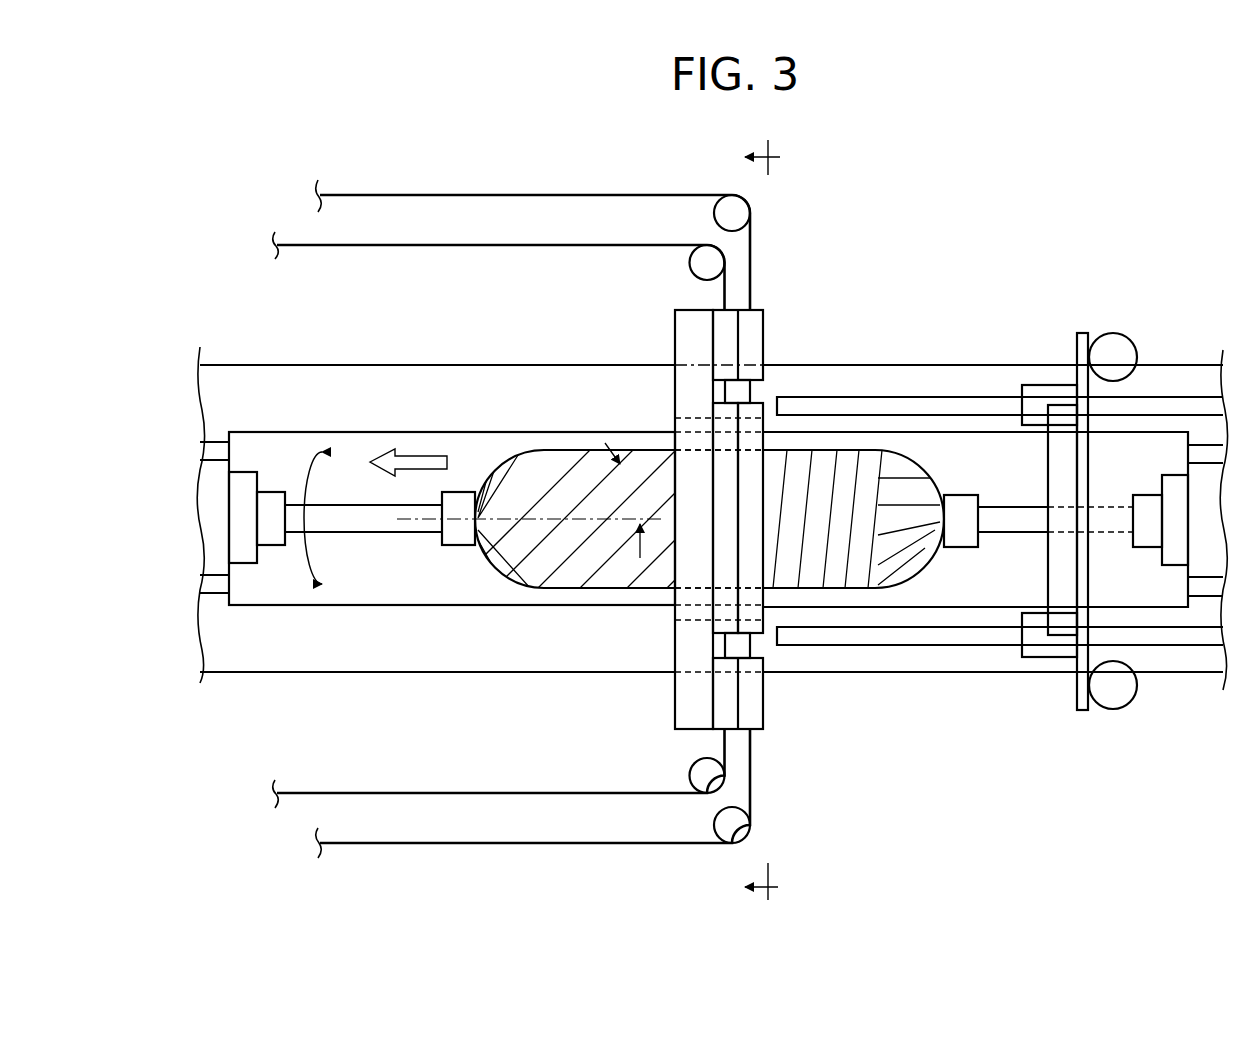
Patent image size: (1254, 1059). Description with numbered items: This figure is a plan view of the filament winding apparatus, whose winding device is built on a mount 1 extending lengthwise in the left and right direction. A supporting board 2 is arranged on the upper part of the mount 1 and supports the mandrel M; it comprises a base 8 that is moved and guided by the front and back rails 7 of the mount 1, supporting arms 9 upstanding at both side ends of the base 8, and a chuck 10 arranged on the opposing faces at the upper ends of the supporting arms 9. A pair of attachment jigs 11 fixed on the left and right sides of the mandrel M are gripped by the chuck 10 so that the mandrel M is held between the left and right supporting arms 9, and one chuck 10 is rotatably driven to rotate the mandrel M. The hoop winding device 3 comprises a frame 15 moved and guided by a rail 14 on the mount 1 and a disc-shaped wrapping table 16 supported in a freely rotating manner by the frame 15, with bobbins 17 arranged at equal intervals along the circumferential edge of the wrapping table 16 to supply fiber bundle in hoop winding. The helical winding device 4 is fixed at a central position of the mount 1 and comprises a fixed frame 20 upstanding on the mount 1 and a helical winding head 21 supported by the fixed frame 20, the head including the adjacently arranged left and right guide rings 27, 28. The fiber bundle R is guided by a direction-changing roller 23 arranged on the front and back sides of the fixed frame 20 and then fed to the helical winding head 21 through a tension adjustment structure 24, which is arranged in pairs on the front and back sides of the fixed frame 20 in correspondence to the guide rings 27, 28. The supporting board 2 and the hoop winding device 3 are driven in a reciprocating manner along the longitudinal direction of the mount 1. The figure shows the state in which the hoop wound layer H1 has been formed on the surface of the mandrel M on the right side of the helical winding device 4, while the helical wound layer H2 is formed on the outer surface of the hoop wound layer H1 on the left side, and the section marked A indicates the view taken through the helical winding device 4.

The mount 1 is at (265, 673).
The supporting board 2 is at (366, 608).
The hoop winding device 3 is at (1139, 326).
The helical winding device 4 is at (660, 350).
The rails 7 is at (217, 570).
The base 8 is at (345, 432).
The supporting arms 9 is at (250, 468).
The chuck 10 is at (275, 494).
The attachment jigs 11 is at (368, 533).
The rail 14 is at (957, 405).
The frame 15 is at (1055, 580).
The wrapping table 16 is at (1088, 563).
The bobbins 17 is at (1113, 345).
The fixed frame 20 is at (683, 687).
The helical winding head 21 is at (771, 391).
The direction-changing roller 23 is at (707, 260).
The tension adjustment structure 24 is at (755, 318).
The guide ring 27 is at (727, 512).
The guide ring 28 is at (750, 527).
The fiber bundle R is at (485, 245).
The mandrel M is at (612, 588).
The hoop wound layer H1 is at (820, 458).
The helical wound layer H2 is at (583, 462).
The section line A is at (773, 520).